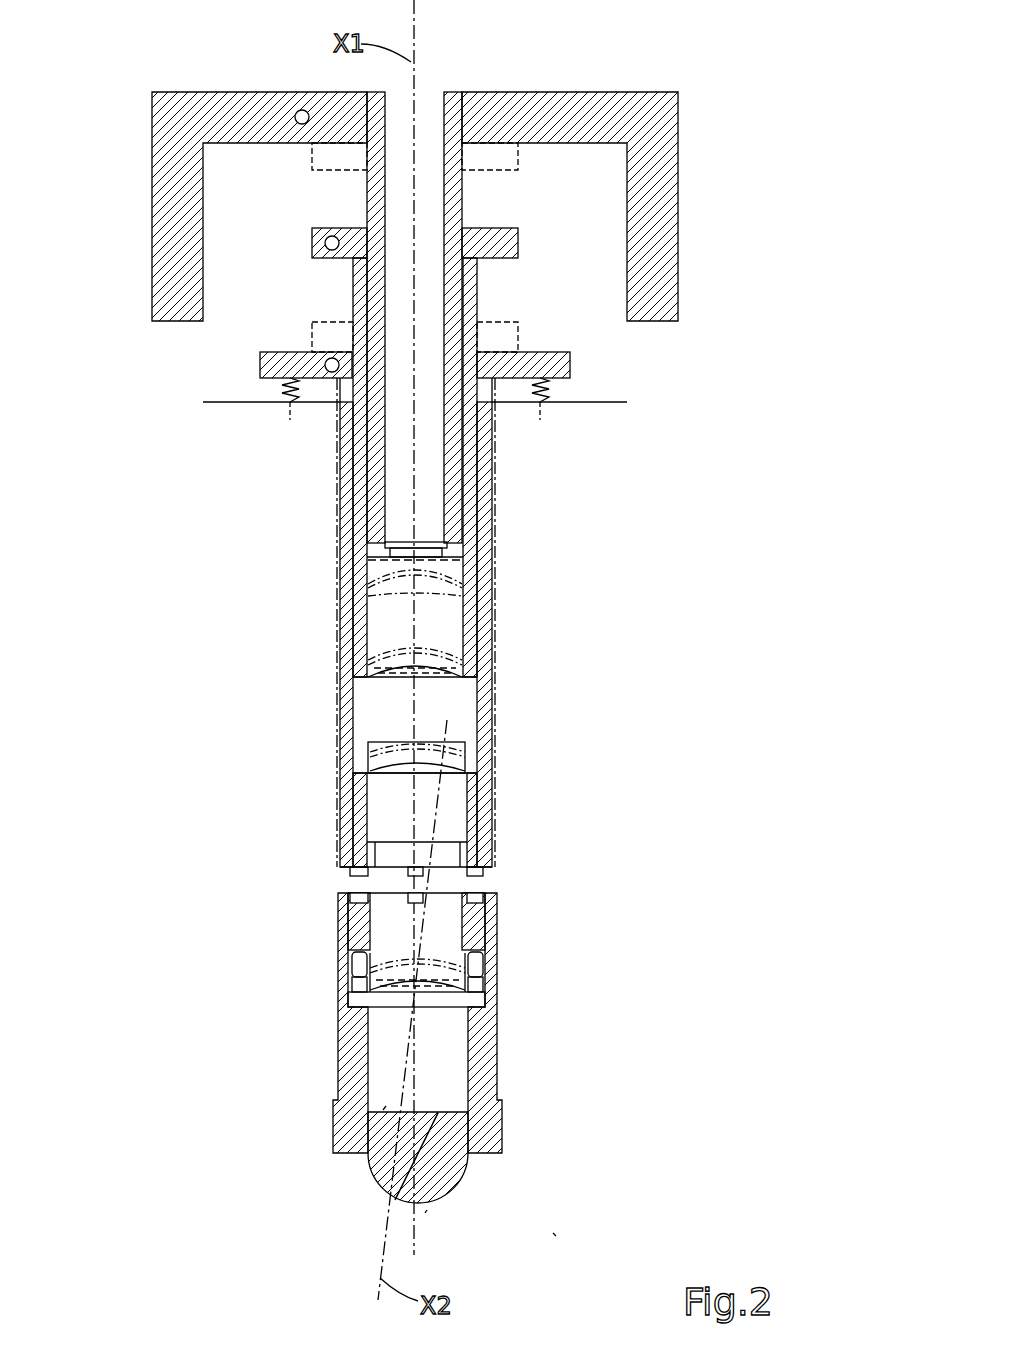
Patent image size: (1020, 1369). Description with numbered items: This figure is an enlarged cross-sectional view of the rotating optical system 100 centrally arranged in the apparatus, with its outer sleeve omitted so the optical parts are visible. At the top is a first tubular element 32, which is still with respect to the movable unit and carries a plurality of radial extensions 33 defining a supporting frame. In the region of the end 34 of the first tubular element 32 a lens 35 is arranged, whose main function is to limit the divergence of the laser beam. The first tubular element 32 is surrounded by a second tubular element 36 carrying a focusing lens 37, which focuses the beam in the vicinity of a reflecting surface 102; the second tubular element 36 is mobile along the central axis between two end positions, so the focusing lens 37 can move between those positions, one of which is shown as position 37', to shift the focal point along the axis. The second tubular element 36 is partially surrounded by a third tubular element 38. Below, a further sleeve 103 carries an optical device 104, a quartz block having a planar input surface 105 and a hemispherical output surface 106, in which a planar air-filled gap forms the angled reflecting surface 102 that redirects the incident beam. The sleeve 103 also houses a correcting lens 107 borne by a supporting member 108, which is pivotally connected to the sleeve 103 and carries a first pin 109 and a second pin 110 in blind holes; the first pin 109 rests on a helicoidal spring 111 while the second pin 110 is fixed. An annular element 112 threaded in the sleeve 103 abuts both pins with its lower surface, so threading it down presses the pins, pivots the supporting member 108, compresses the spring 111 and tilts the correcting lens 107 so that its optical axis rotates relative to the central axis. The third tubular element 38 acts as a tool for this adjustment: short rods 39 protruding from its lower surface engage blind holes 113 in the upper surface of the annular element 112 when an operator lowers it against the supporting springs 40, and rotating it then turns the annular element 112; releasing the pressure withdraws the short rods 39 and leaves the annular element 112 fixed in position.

The first tubular element 32 is at (483, 113).
The radial extensions 33 is at (165, 193).
The end of the tubular element 34 is at (457, 542).
The lens 35 is at (443, 540).
The second tubular element 36 is at (473, 618).
The focusing lens 37 is at (473, 662).
The end position of the focusing lens 37' is at (476, 762).
The third tubular element 38 is at (485, 855).
The short rods 39 is at (350, 872).
The supporting springs 40 is at (290, 400).
The rotating optical system 100 is at (555, 1237).
The reflecting surface 102 is at (430, 1122).
The sleeve 103 is at (490, 1060).
The optical device 104 is at (450, 1165).
The planar input surface 105 is at (380, 1107).
The hemispherical output surface 106 is at (430, 1214).
The correcting lens 107 is at (465, 975).
The supporting member 108 is at (485, 1000).
The first pin 109 is at (352, 958).
The second pin 110 is at (485, 960).
The helicoidal spring 111 is at (350, 986).
The annular element 112 is at (480, 917).
The blind holes 113 is at (352, 897).